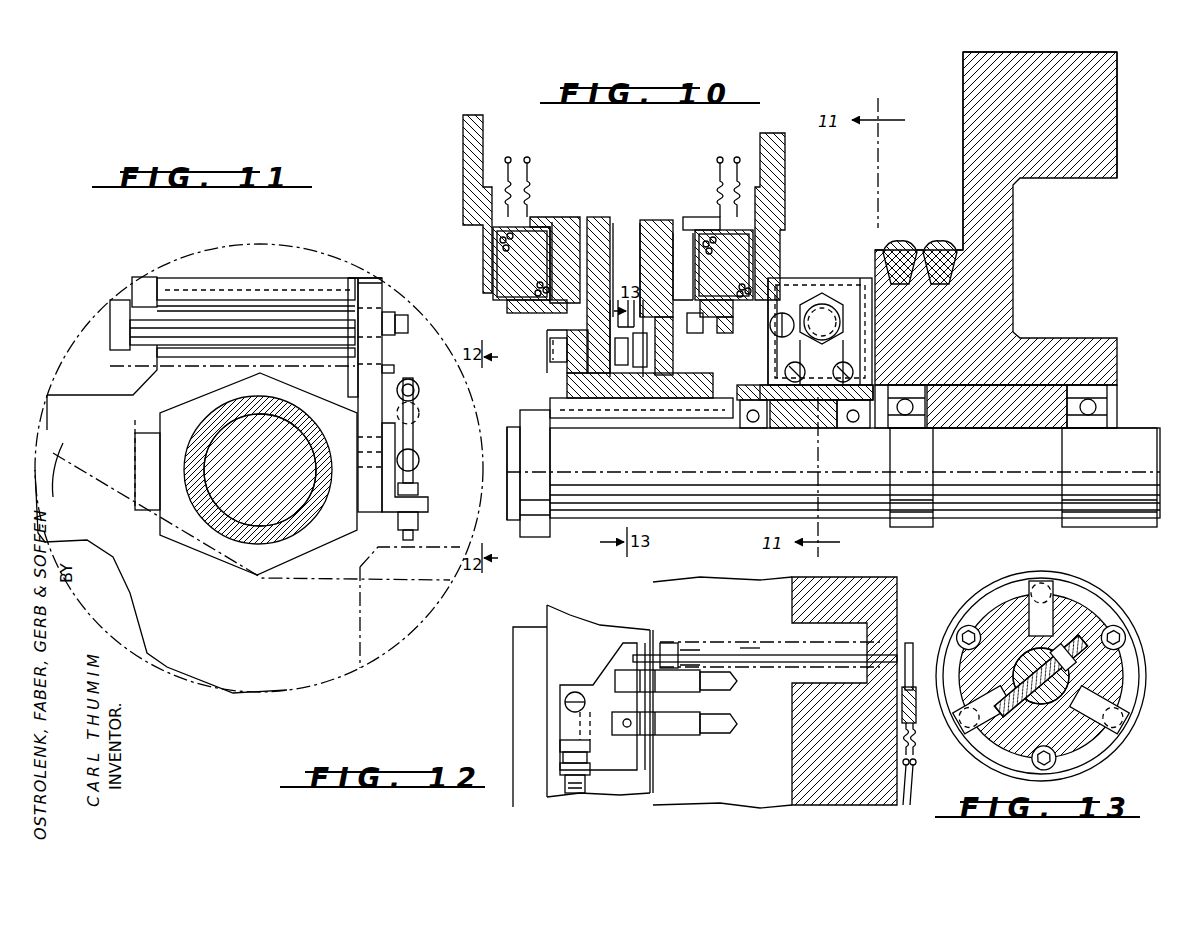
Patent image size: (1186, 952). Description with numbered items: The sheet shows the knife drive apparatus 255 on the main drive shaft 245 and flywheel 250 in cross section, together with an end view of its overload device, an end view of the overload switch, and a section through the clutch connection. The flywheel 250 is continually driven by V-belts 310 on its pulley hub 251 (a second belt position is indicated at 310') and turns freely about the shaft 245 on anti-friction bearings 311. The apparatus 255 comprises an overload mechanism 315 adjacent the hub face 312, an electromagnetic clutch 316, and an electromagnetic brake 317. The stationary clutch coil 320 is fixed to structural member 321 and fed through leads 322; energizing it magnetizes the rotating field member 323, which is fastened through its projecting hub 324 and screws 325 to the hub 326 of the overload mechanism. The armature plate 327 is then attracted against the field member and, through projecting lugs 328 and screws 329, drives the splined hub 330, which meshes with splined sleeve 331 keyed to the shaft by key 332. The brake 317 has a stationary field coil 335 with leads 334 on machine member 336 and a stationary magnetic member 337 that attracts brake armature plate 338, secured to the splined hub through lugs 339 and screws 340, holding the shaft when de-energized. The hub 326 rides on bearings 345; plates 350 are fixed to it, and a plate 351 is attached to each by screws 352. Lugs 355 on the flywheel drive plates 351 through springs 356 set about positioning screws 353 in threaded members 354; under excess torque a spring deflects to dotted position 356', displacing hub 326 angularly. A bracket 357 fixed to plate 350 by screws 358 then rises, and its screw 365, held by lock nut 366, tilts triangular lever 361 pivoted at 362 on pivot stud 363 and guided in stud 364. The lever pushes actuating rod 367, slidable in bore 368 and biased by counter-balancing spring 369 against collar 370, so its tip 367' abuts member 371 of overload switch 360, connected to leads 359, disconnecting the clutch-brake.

In FIG. 10, the stationary machine member 336 is at (467, 150).
In FIG. 10, the leads 334 is at (527, 157).
In FIG. 10, the electromagnetic brake 317 is at (548, 214).
In FIG. 10, the stationary magnetic member 337 is at (572, 228).
In FIG. 10, the brake armature plate 338 is at (600, 220).
In FIG. 10, the knife drive apparatus 255 is at (683, 207).
In FIG. 10, the electromagnetic clutch 316 is at (697, 216).
In FIG. 10, the leads 322 is at (737, 157).
In FIG. 10, the stationary structural member 321 is at (786, 182).
In FIG. 10, the rotating field member 323 is at (675, 228).
In FIG. 10, the armature plate 327 is at (640, 240).
In FIG. 13, the armature plate 327 is at (1085, 592).
In FIG. 10, the projecting lugs 328 is at (665, 300).
In FIG. 13, the projecting lugs 328 is at (1028, 605).
In FIG. 10, the stationary field coil 335 is at (502, 266).
In FIG. 10, the lugs 339 is at (556, 329).
In FIG. 10, the screws 340 is at (549, 345).
In FIG. 10, the screws 325 is at (713, 345).
In FIG. 10, the clutch coil 320 is at (762, 262).
In FIG. 10, the projecting hub 324 is at (766, 305).
In FIG. 10, the overload mechanism 315 is at (821, 270).
In FIG. 11, the overload mechanism 315 is at (172, 268).
In FIG. 10, the hub face 312 is at (878, 263).
In FIG. 11, the hub face 312 is at (108, 330).
In FIG. 10, the gear tooth 310' is at (891, 237).
In FIG. 10, the V-belts 310 is at (940, 237).
In FIG. 10, the pulley hub 251 is at (918, 245).
In FIG. 10, the flywheel 250 is at (1118, 108).
In FIG. 11, the flywheel 250 is at (282, 250).
In FIG. 12, the flywheel 250 is at (712, 780).
In FIG. 10, the anti-friction bearings 311 is at (1075, 385).
In FIG. 10, the main drive shaft 245 is at (1130, 440).
In FIG. 13, the main drive shaft 245 is at (1060, 720).
In FIG. 10, the key 332 is at (617, 445).
In FIG. 13, the key 332 is at (1075, 660).
In FIG. 10, the splined hub 330 is at (675, 400).
In FIG. 13, the splined hub 330 is at (1090, 622).
In FIG. 10, the screws 329 is at (690, 380).
In FIG. 13, the screws 329 is at (1048, 590).
In FIG. 10, the anti-friction bearings 345 is at (757, 430).
In FIG. 10, the hub 326 is at (805, 430).
In FIG. 11, the hub 326 is at (205, 400).
In FIG. 12, the hub 326 is at (512, 798).
In FIG. 11, the spring 356 is at (256, 267).
In FIG. 11, the dotted position 356' is at (362, 236).
In FIG. 11, the plate 351 is at (366, 280).
In FIG. 11, the threaded member 354 is at (400, 312).
In FIG. 11, the positioning screw 353 is at (278, 310).
In FIG. 11, the lugs 355 is at (60, 375).
In FIG. 11, the screws 352 is at (396, 370).
In FIG. 11, the plates 350 is at (137, 433).
In FIG. 12, the plates 350 is at (560, 797).
In FIG. 11, the bracket 357 is at (420, 500).
In FIG. 12, the bracket 357 is at (560, 760).
In FIG. 11, the screws 358 is at (380, 505).
In FIG. 12, the screws 358 is at (566, 700).
In FIG. 12, the triangular lever 361 is at (610, 660).
In FIG. 12, the collar 370 is at (672, 643).
In FIG. 12, the counter-balancing spring 369 is at (718, 652).
In FIG. 12, the actuating rod 367 is at (765, 645).
In FIG. 12, the rod tip 367' is at (923, 650).
In FIG. 12, the bore 368 is at (778, 668).
In FIG. 12, the stud 364 is at (700, 692).
In FIG. 12, the screw 365 is at (560, 745).
In FIG. 12, the pivot 362 is at (627, 728).
In FIG. 12, the pivot stud 363 is at (690, 735).
In FIG. 12, the overload switch 360 is at (905, 705).
In FIG. 12, the member 371 is at (918, 723).
In FIG. 12, the lock nut 366 is at (586, 780).
In FIG. 12, the leads 359 is at (906, 805).
In FIG. 13, the splined sleeve 331 is at (1000, 745).